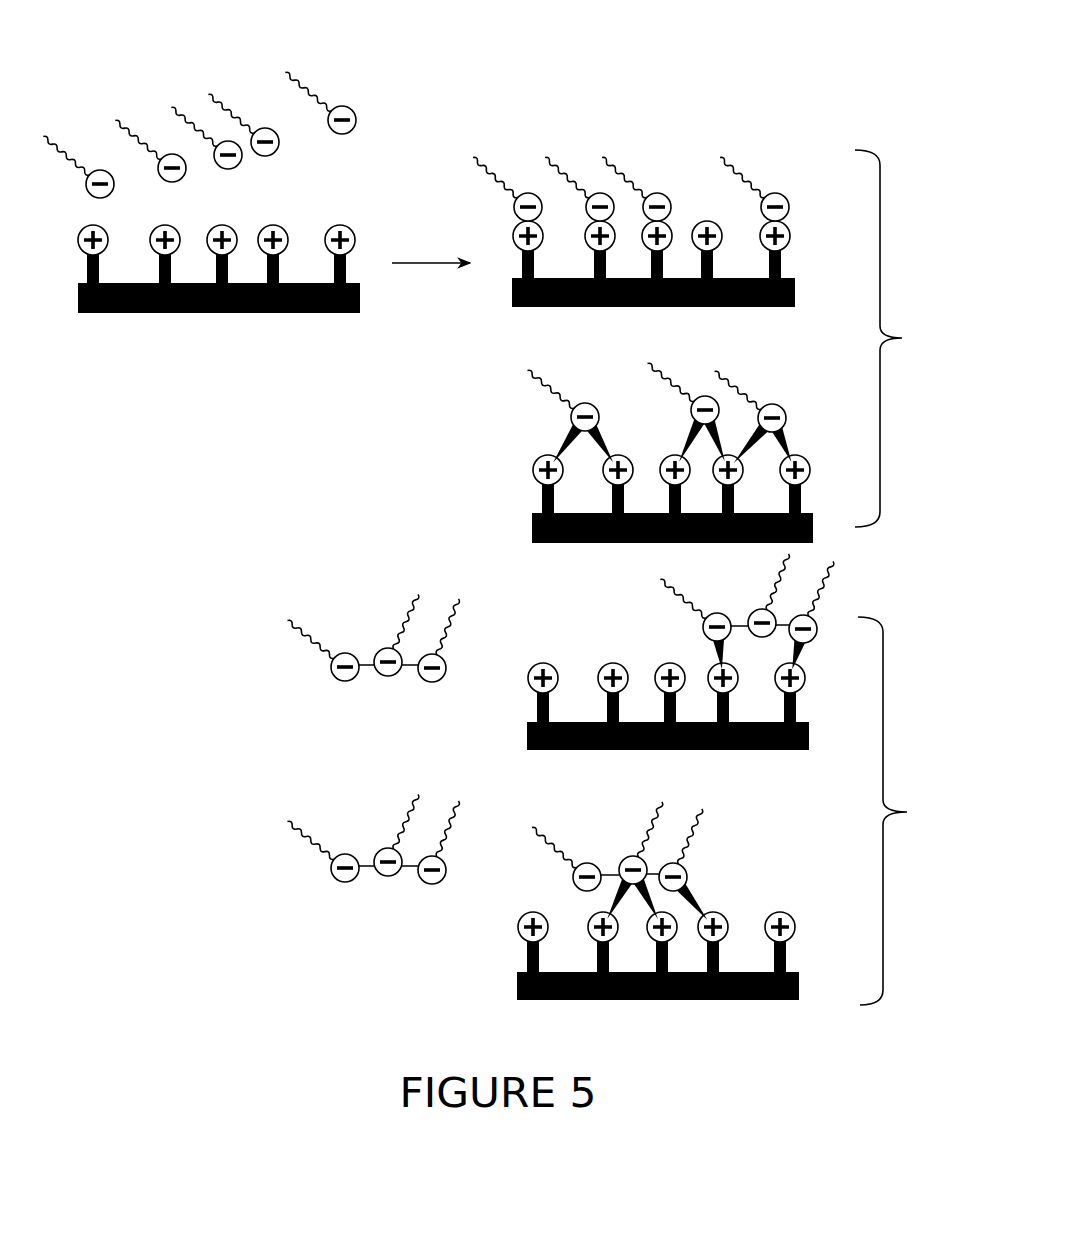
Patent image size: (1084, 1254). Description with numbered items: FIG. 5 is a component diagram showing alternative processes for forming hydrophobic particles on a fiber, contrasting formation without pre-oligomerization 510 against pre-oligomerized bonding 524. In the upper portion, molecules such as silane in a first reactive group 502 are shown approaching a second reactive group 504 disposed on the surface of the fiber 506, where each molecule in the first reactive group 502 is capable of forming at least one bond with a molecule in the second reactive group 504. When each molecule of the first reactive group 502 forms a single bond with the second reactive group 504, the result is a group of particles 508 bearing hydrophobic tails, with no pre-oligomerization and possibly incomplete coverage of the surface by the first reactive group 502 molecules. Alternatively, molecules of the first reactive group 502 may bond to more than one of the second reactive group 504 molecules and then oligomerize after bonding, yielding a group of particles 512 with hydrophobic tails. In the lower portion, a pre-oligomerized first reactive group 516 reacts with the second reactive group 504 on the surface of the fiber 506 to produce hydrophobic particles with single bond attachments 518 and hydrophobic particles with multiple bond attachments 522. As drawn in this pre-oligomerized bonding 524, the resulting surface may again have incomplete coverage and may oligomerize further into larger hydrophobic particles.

The first reactive group 502 is at (358, 102).
The second reactive group 504 is at (357, 221).
The surface of the fiber 506 is at (297, 324).
The group of particles 508 is at (798, 190).
The formation without pre-oligomerization 510 is at (912, 352).
The group of particles 512 is at (513, 465).
The pre-oligomerized first reactive group 516 is at (372, 641).
The hydrophobic particles with single bond attachments 518 is at (672, 646).
The hydrophobic particles with multiple bond attachments 522 is at (606, 840).
The pre-oligomerized bonding 524 is at (918, 827).